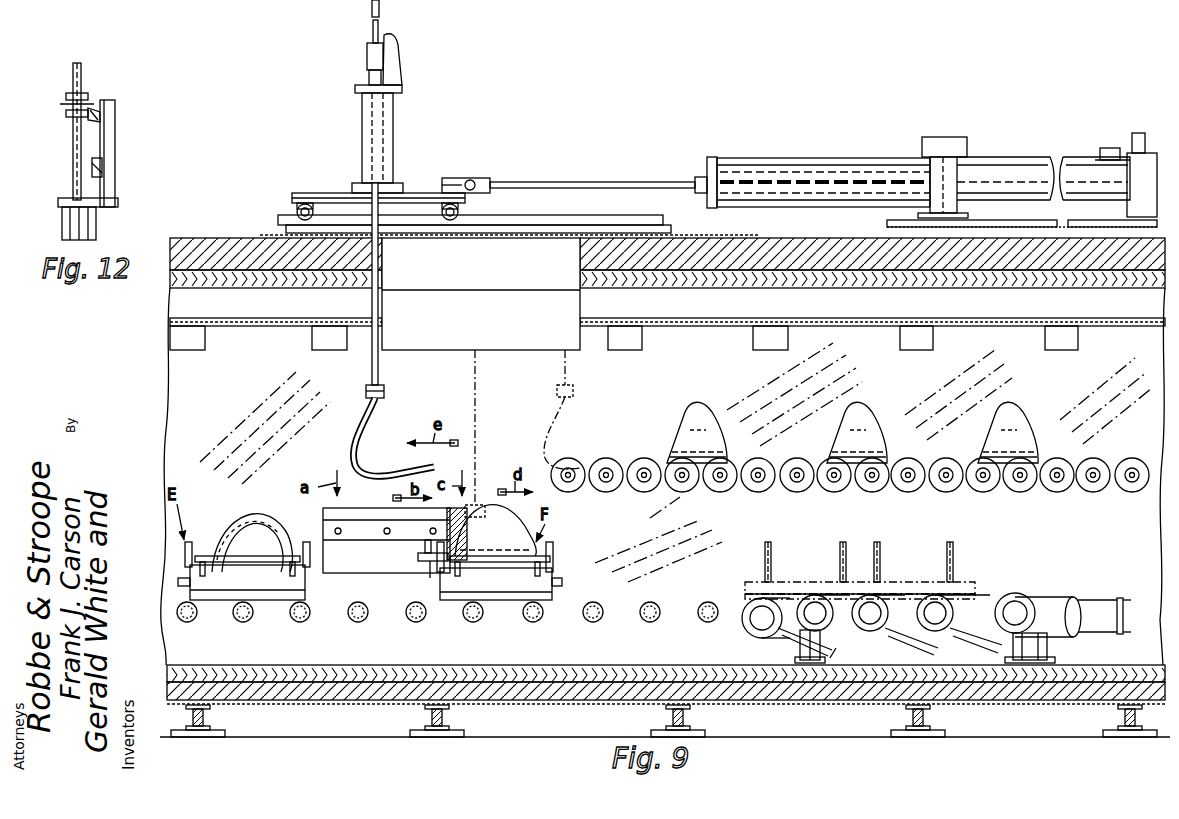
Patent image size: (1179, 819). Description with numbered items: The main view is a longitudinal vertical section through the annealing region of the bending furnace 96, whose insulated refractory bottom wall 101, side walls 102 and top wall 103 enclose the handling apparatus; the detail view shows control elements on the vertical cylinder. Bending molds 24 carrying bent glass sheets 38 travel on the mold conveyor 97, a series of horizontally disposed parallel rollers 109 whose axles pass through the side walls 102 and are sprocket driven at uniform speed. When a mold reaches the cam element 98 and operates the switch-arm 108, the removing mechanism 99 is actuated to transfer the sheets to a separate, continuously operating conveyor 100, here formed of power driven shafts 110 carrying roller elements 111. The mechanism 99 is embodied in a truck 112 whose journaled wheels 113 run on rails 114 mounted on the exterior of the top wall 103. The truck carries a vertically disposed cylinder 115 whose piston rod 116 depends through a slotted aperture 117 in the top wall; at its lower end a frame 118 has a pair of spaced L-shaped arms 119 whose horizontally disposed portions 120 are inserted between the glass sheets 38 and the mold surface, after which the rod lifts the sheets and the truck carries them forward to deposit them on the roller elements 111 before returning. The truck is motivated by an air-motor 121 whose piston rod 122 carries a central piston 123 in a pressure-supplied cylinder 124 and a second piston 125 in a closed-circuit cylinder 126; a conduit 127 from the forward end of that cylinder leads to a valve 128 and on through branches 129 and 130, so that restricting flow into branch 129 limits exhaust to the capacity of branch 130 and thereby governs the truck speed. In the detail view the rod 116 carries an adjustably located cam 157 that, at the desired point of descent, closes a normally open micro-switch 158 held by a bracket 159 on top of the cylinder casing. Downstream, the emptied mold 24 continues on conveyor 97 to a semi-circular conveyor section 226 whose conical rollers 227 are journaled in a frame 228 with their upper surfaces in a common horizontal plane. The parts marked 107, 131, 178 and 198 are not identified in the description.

In FIG. 9, the bending mold 24 is at (269, 522).
In FIG. 9, the glass sheets 38 is at (696, 433).
In FIG. 9, the furnace 96 is at (207, 234).
In FIG. 9, the mold conveyor 97 is at (294, 619).
In FIG. 9, the cam element 98 is at (323, 535).
In FIG. 9, the removing mechanism 99 is at (347, 181).
In FIG. 9, the conveyor 100 is at (636, 460).
In FIG. 9, the bottom wall 101 is at (545, 673).
In FIG. 9, the side walls 102 is at (185, 368).
In FIG. 9, the top wall 103 is at (238, 258).
In FIG. 9, the block 107 is at (370, 556).
In FIG. 9, the switch-arm 108 is at (385, 533).
In FIG. 9, the rollers 109 is at (414, 621).
In FIG. 9, the power driven shafts 110 is at (757, 482).
In FIG. 9, the roller elements 111 is at (762, 474).
In FIG. 9, the truck 112 is at (336, 191).
In FIG. 9, the wheels 113 is at (299, 207).
In FIG. 9, the rails 114 is at (538, 222).
In FIG. 12, the cylinder 115 is at (70, 228).
In FIG. 9, the cylinder 115 is at (389, 144).
In FIG. 12, the piston rod 116 is at (74, 160).
In FIG. 9, the piston rod 116 is at (372, 30).
In FIG. 9, the slotted aperture 117 is at (441, 325).
In FIG. 9, the frame 118 is at (367, 398).
In FIG. 9, the L-shaped arms 119 is at (376, 434).
In FIG. 9, the horizontally disposed portions 120 is at (371, 467).
In FIG. 9, the air-motor 121 is at (786, 156).
In FIG. 9, the piston rod 122 is at (648, 181).
In FIG. 9, the piston 123 is at (733, 165).
In FIG. 9, the cylinder 124 is at (838, 178).
In FIG. 9, the second piston 125 is at (986, 160).
In FIG. 9, the cylinder 126 is at (1022, 176).
In FIG. 9, the conduit 127 is at (1076, 165).
In FIG. 9, the valve 128 is at (1110, 149).
In FIG. 9, the conduit branch 129 is at (1106, 148).
In FIG. 9, the conduit branch 130 is at (1128, 136).
In FIG. 9, the lever 131 is at (423, 562).
In FIG. 12, the cam 157 is at (88, 104).
In FIG. 12, the micro-switch 158 is at (104, 174).
In FIG. 12, the bracket 159 is at (109, 143).
In FIG. 9, the bracket 159 is at (396, 68).
In FIG. 9, the coupling block 178 is at (473, 181).
In FIG. 12, the bracket 198 is at (101, 116).
In FIG. 9, the semi-circular conveyor section 226 is at (995, 592).
In FIG. 9, the conical rollers 227 is at (757, 630).
In FIG. 9, the frame 228 is at (1094, 612).